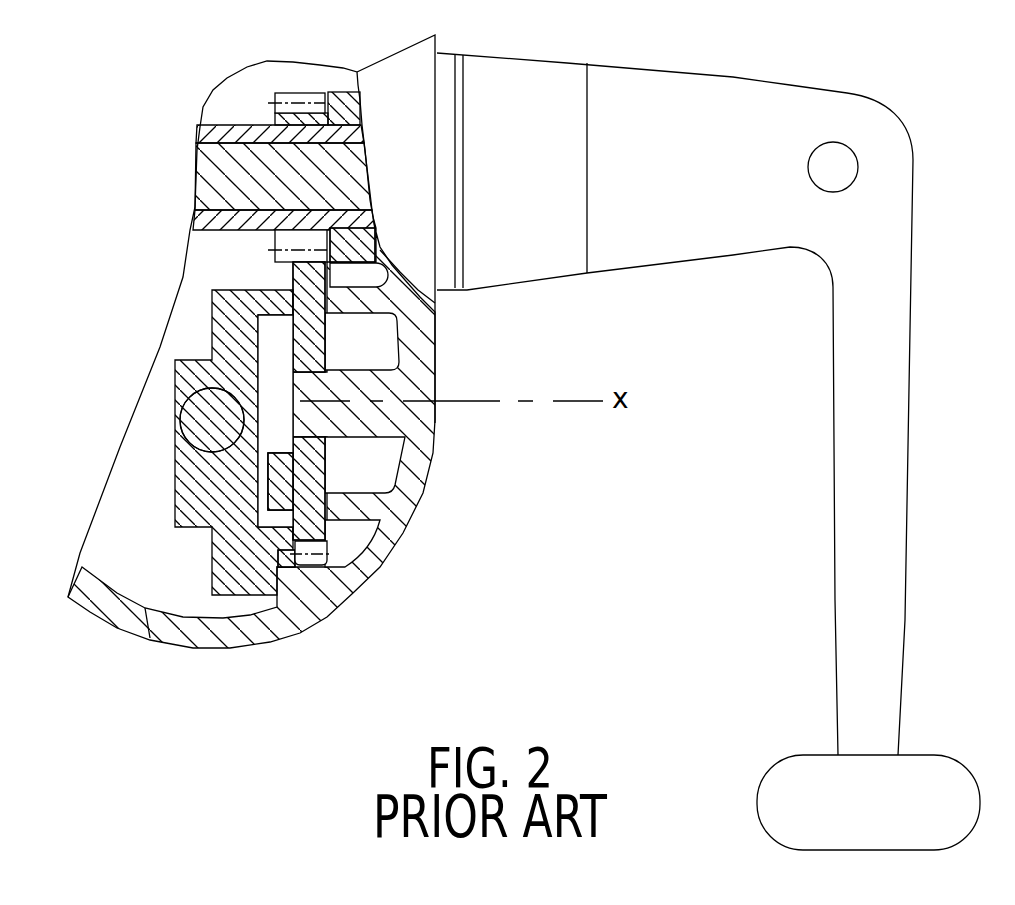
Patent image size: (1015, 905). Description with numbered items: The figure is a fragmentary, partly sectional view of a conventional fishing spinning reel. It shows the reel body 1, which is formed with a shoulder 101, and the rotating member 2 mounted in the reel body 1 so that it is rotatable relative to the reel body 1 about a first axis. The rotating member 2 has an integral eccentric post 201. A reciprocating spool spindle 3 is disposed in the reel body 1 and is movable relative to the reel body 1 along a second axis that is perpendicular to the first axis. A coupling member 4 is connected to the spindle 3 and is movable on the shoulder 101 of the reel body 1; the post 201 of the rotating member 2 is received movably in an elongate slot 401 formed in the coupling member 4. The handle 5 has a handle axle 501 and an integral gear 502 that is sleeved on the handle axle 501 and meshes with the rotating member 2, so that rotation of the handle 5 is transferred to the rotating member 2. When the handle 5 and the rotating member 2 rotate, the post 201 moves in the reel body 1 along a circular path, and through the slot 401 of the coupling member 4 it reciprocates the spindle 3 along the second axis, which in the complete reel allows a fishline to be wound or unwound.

The reel body 1 is at (437, 509).
The shoulder 101 is at (280, 583).
The rotating member 2 is at (340, 341).
The eccentric post 201 is at (283, 487).
The reciprocating spool spindle 3 is at (162, 420).
The coupling member 4 is at (160, 372).
The elongate slot 401 is at (275, 342).
The handle 5 is at (778, 80).
The handle axle 501 is at (204, 182).
The integral gear 502 is at (307, 102).